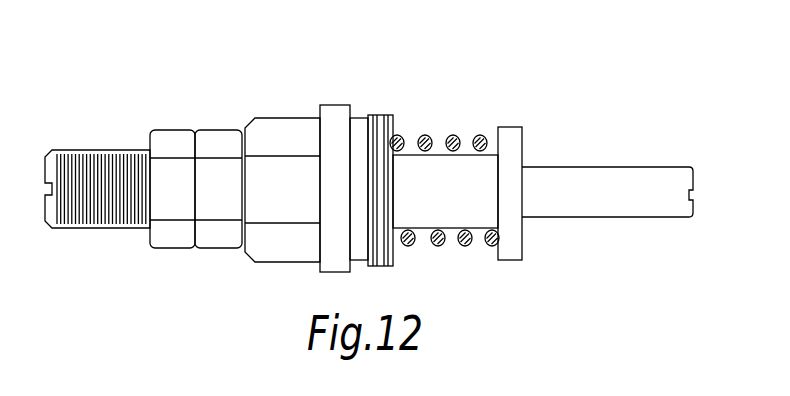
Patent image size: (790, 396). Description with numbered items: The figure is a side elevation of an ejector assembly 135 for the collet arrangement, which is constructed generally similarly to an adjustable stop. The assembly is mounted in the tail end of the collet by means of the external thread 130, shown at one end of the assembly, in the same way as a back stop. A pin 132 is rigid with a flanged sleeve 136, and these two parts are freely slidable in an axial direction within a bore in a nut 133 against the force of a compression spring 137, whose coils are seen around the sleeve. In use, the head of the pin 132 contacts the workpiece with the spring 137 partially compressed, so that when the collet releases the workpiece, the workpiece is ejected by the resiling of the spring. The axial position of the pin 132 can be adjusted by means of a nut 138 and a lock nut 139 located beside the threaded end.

The external thread 130 is at (381, 114).
The pin 132 is at (605, 185).
The nut 133 is at (298, 232).
The ejector assembly 135 is at (302, 98).
The flanged sleeve 136 is at (457, 160).
The compression spring 137 is at (440, 247).
The nut 138 is at (213, 137).
The lock nut 139 is at (166, 138).